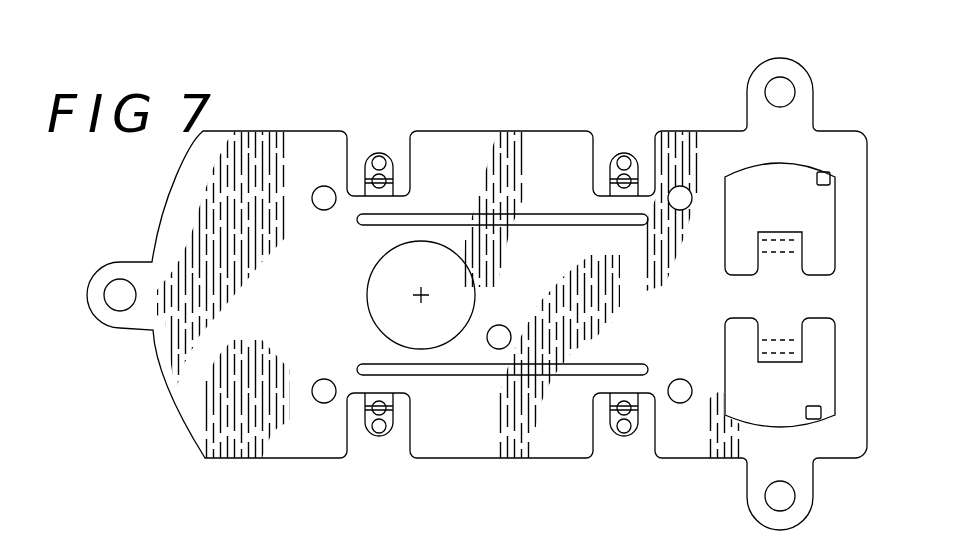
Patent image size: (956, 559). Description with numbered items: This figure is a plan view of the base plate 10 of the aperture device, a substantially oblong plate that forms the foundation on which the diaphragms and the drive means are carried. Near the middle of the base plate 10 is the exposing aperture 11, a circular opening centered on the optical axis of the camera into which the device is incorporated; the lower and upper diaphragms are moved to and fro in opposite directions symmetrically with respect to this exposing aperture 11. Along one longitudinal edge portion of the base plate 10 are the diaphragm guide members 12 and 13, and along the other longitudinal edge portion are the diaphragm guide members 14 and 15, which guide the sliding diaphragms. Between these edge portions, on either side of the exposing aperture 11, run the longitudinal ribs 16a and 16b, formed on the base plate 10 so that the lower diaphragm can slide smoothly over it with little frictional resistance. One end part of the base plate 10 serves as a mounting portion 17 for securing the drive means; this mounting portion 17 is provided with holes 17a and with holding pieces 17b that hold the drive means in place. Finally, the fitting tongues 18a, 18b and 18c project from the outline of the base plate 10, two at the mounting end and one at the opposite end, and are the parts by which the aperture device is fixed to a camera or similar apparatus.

The base plate 10 is at (187, 398).
The exposing aperture 11 is at (432, 251).
The diaphragm guide member 12 is at (392, 163).
The diaphragm guide member 13 is at (624, 163).
The diaphragm guide member 14 is at (380, 428).
The diaphragm guide member 15 is at (625, 428).
The longitudinal rib 16a is at (557, 216).
The longitudinal rib 16b is at (462, 376).
The mounting portion 17 is at (713, 155).
The hole 17a is at (830, 182).
The holding piece 17b is at (770, 238).
The fitting tongue 18a is at (795, 72).
The fitting tongue 18b is at (752, 490).
The fitting tongue 18c is at (98, 276).